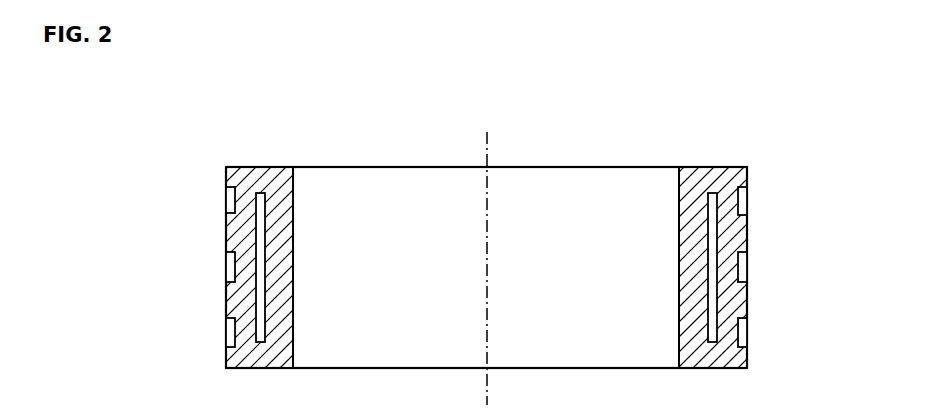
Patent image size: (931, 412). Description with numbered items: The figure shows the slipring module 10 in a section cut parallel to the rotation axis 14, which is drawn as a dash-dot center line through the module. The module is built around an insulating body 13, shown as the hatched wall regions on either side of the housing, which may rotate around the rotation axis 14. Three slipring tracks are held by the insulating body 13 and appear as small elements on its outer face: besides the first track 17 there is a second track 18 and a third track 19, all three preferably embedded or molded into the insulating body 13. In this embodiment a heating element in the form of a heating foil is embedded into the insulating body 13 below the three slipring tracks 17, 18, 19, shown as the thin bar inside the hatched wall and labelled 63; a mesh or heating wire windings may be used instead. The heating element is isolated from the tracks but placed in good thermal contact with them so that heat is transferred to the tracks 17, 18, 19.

The slipring module 10 is at (604, 143).
The insulating body 13 is at (273, 230).
The rotating axis 14 is at (486, 254).
The slipring track 17 is at (748, 201).
The second track 18 is at (748, 267).
The third track 19 is at (748, 330).
The contact elements 63 is at (259, 290).